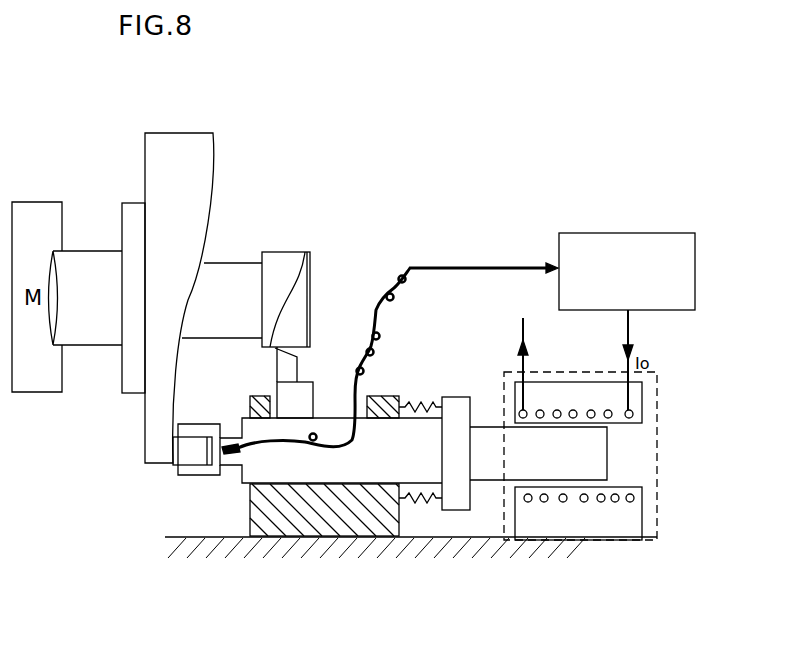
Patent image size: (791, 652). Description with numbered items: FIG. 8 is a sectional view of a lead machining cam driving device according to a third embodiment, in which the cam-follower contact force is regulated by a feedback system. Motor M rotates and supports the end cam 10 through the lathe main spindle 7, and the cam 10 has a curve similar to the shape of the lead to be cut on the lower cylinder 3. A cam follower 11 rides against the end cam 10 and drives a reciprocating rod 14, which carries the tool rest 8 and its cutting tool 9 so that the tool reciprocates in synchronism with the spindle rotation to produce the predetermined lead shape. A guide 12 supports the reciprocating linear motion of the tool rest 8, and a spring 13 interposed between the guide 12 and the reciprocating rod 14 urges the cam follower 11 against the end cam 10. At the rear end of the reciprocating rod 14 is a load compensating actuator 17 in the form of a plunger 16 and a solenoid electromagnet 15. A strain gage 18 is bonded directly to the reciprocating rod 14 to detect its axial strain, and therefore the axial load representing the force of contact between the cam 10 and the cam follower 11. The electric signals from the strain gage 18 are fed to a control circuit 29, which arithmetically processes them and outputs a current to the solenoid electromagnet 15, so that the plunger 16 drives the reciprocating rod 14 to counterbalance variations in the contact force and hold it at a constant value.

The lower cylinder 3 is at (280, 263).
The main spindle 7 is at (74, 255).
The tool rest 8 is at (310, 392).
The cutting tool 9 is at (300, 363).
The end cam 10 is at (194, 138).
The cam follower 11 is at (187, 453).
The guide 12 is at (270, 523).
The spring 13 is at (420, 397).
The reciprocating rod 14 is at (293, 470).
The solenoid electromagnet 15 is at (552, 392).
The plunger 16 is at (597, 463).
The load compensating actuator 17 is at (657, 395).
The strain gage 18 is at (227, 455).
The control circuit 29 is at (621, 243).